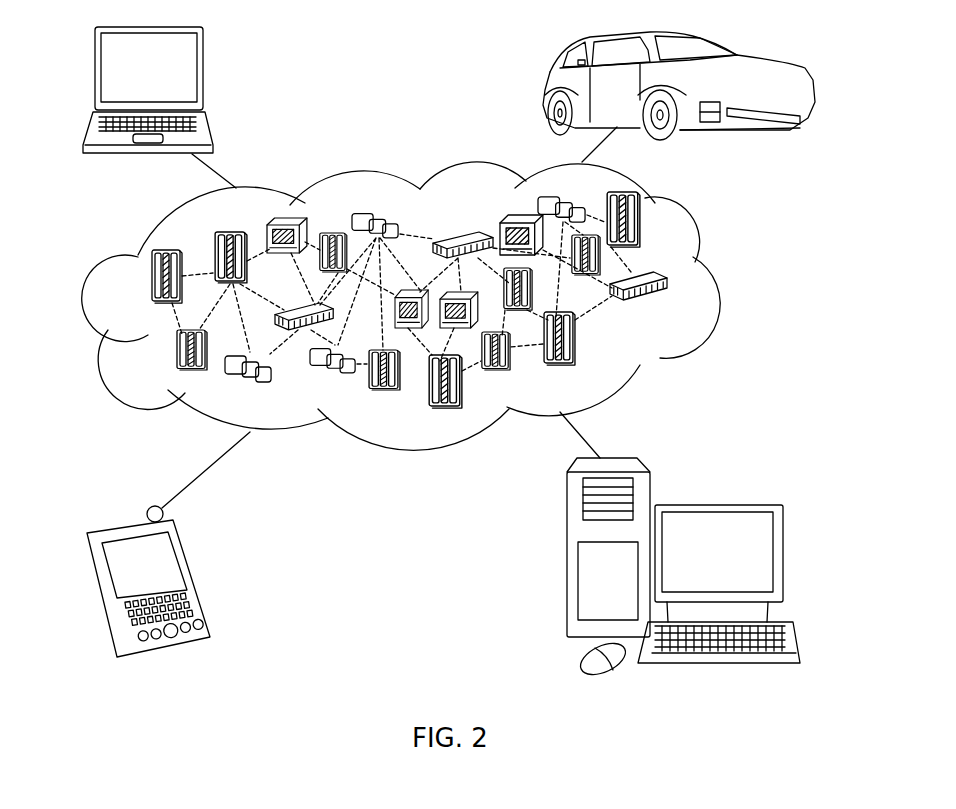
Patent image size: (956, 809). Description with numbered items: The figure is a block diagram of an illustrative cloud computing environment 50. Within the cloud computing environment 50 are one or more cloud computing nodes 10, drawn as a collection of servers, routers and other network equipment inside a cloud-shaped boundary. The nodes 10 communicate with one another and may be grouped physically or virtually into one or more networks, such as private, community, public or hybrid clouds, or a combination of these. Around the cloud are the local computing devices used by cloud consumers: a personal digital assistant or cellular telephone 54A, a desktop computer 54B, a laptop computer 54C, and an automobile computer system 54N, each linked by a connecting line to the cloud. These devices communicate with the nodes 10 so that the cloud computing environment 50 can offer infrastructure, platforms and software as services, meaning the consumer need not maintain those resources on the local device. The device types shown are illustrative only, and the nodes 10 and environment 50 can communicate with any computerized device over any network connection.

The cloud computing nodes 10 is at (422, 317).
The cloud computing environment 50 is at (716, 283).
The personal digital assistant (PDA) or cellular telephone 54A is at (193, 573).
The desktop computer 54B is at (727, 487).
The laptop computer 54C is at (204, 77).
The automobile computer system 54N is at (542, 92).